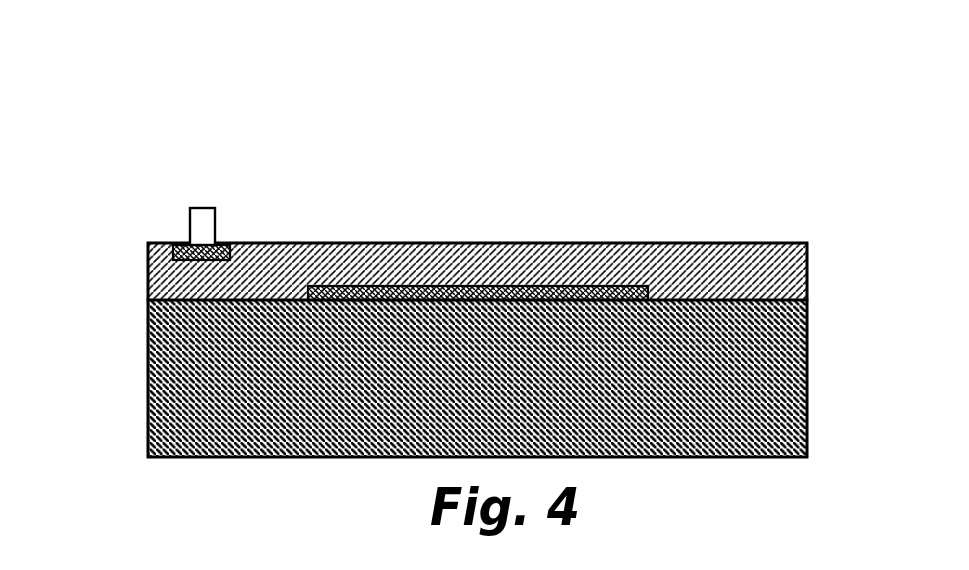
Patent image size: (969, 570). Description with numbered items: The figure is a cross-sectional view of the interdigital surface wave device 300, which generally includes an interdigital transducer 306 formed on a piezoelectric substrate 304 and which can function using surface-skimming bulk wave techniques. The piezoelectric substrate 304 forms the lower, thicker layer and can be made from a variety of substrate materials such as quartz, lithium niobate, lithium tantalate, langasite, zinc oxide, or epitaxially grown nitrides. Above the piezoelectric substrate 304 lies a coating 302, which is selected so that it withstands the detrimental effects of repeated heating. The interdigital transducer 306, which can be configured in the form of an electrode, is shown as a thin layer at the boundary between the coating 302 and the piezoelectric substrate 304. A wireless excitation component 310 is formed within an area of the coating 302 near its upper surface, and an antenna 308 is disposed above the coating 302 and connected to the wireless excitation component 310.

The interdigital surface wave device 300 is at (102, 122).
The coating 302 is at (148, 276).
The piezoelectric substrate 304 is at (148, 356).
The interdigital transducer 306 is at (462, 286).
The antenna 308 is at (190, 218).
The wireless excitation component 310 is at (224, 243).